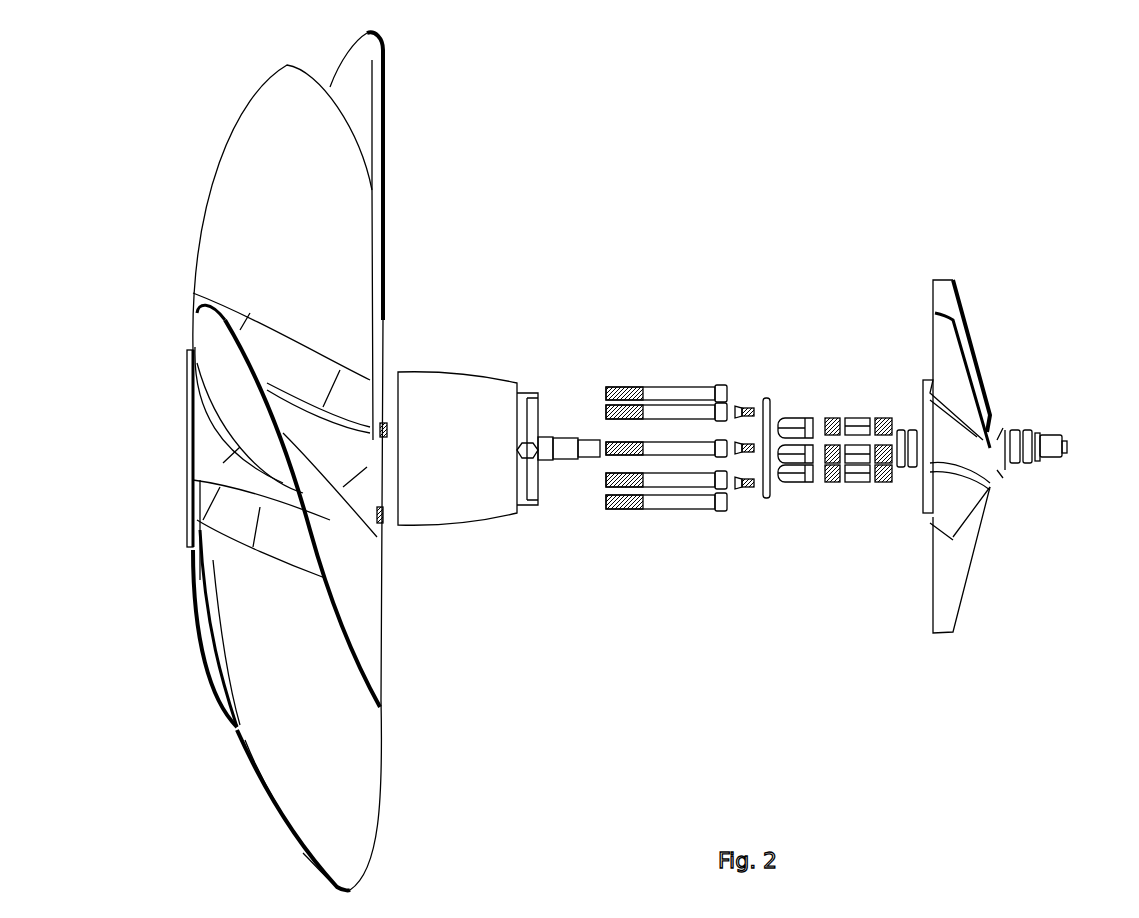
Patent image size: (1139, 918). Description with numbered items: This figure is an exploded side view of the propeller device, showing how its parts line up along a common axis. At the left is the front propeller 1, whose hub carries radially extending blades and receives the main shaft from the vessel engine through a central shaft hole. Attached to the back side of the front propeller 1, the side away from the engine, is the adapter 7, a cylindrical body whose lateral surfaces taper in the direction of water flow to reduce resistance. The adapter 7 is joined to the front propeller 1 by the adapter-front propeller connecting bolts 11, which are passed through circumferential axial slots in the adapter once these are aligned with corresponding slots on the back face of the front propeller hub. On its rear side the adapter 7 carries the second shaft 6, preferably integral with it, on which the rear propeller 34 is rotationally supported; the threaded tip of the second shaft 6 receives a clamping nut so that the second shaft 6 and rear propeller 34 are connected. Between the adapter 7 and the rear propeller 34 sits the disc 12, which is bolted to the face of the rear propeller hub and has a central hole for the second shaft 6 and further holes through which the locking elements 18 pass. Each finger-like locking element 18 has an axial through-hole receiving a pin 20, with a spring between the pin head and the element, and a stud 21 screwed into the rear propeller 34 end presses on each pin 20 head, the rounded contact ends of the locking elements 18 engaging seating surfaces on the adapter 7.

The front propeller 1 is at (168, 138).
The second shaft 6 is at (567, 453).
The adapter 7 is at (463, 385).
The adapter-front propeller connecting bolts 11 is at (683, 387).
The disc 12 is at (767, 390).
The locking elements 18 is at (797, 487).
The pin 20 is at (855, 410).
The stud 21 is at (878, 487).
The rear propeller 34 is at (987, 283).